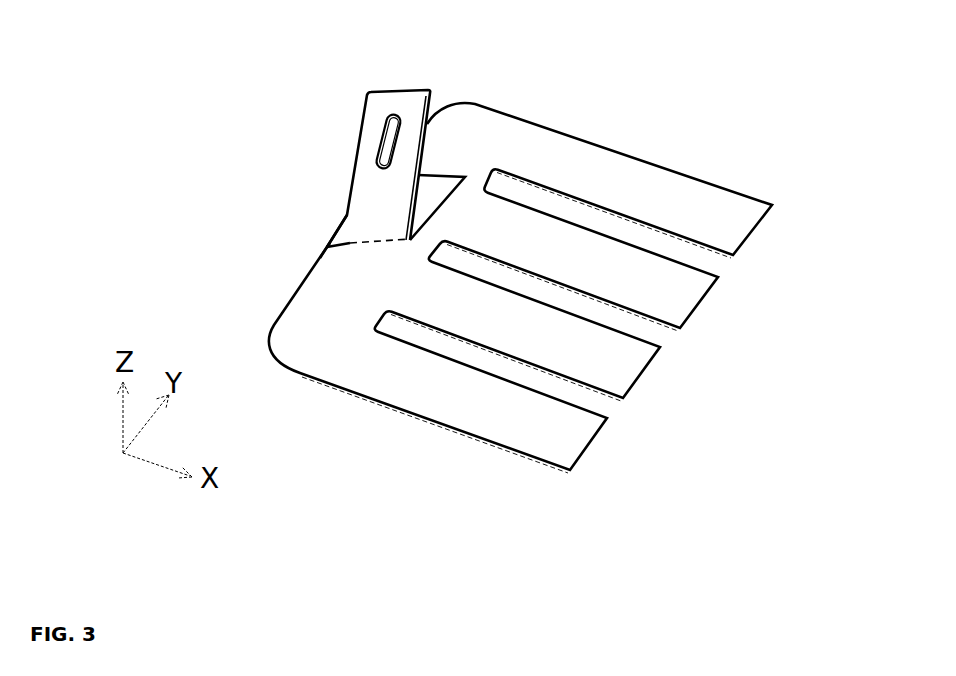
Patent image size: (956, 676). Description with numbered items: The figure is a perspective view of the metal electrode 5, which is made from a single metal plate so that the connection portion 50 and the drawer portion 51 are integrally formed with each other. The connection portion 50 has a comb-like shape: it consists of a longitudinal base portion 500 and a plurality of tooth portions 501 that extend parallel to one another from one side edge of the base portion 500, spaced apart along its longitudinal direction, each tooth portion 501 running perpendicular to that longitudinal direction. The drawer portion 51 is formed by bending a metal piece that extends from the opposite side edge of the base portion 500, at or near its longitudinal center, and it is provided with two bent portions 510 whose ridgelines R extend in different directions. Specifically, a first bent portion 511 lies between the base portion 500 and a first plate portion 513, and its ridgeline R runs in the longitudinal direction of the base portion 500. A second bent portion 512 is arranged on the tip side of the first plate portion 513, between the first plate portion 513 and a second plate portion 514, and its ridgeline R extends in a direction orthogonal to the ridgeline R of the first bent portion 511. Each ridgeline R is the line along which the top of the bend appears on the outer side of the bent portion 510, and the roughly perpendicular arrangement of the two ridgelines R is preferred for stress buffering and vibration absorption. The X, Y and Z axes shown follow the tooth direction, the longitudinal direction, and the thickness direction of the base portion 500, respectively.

The metal electrode 5 is at (484, 246).
The connection portion 50 is at (520, 246).
The base portion 500 is at (474, 135).
The tooth portions 501 is at (557, 162).
The drawer portion 51 is at (300, 234).
The bent portions 510 is at (245, 217).
The first bent portion 511 is at (340, 224).
The second bent portion 512 is at (363, 237).
The first plate portion 513 is at (432, 192).
The second plate portion 514 is at (383, 208).
The ridgeline R is at (325, 246).